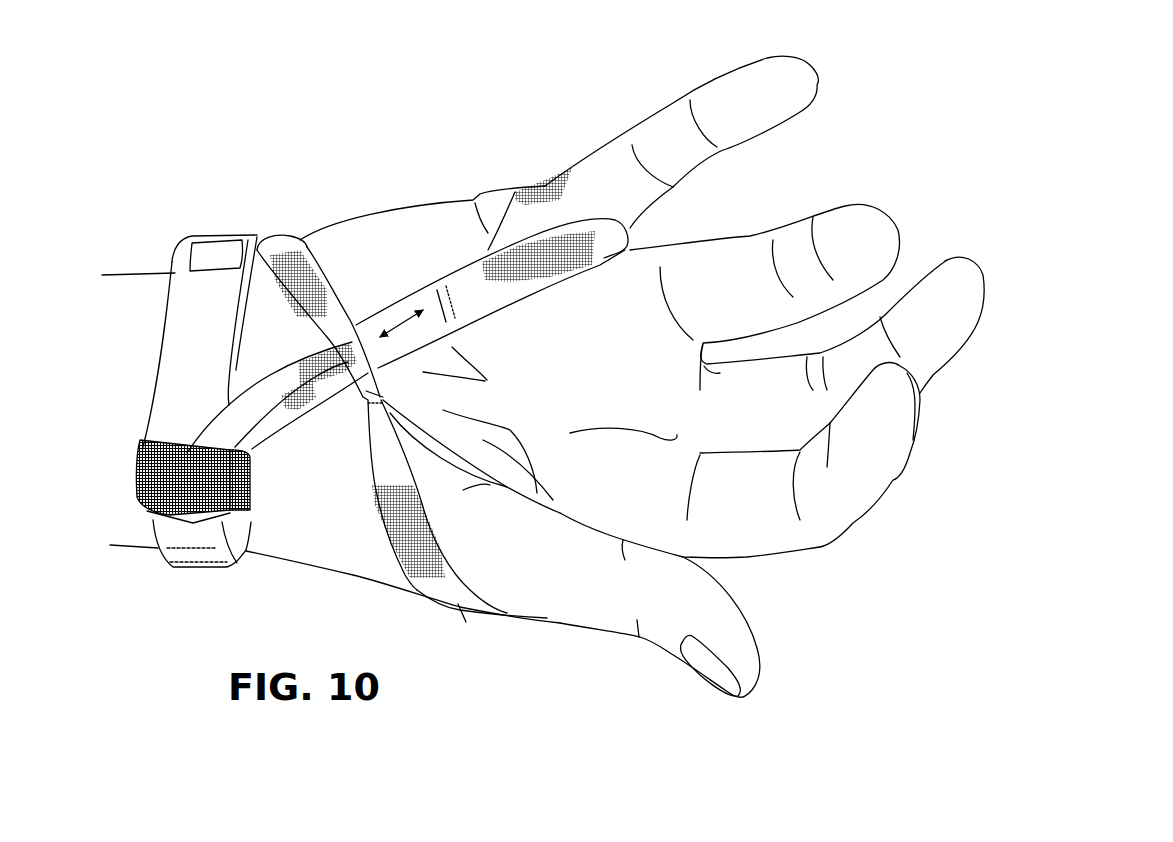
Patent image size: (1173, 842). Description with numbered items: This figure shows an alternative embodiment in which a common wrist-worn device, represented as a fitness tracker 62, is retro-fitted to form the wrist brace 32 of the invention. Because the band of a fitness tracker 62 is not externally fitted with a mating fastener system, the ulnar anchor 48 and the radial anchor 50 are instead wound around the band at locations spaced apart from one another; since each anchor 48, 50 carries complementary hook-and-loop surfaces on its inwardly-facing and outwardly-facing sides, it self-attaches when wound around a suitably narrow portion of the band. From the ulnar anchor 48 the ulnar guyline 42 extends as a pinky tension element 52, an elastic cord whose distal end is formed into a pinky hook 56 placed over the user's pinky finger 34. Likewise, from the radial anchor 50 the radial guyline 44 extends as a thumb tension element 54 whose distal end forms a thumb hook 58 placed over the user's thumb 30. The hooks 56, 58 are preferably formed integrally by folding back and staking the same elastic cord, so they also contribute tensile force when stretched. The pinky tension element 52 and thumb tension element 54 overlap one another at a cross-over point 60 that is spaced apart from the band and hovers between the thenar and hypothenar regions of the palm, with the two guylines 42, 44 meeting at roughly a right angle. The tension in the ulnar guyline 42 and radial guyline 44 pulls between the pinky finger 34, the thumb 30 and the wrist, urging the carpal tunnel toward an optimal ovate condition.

The thumb 30 is at (752, 671).
The wrist brace 32 is at (130, 377).
The pinky finger 34 is at (803, 80).
The ulnar guyline 42 is at (424, 345).
The radial guyline 44 is at (363, 438).
The ulnar anchor 48 is at (140, 480).
The radial anchor 50 is at (260, 237).
The pinky tension element 52 is at (260, 417).
The thumb tension element 54 is at (314, 272).
The pinky hook 56 is at (543, 187).
The thumb hook 58 is at (463, 620).
The cross-over point 60 is at (381, 383).
The fitness tracker 62 is at (173, 360).